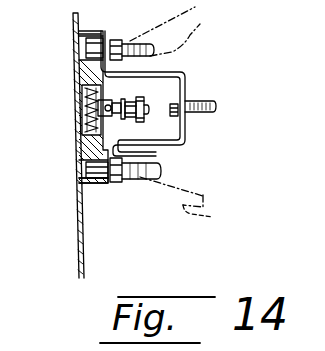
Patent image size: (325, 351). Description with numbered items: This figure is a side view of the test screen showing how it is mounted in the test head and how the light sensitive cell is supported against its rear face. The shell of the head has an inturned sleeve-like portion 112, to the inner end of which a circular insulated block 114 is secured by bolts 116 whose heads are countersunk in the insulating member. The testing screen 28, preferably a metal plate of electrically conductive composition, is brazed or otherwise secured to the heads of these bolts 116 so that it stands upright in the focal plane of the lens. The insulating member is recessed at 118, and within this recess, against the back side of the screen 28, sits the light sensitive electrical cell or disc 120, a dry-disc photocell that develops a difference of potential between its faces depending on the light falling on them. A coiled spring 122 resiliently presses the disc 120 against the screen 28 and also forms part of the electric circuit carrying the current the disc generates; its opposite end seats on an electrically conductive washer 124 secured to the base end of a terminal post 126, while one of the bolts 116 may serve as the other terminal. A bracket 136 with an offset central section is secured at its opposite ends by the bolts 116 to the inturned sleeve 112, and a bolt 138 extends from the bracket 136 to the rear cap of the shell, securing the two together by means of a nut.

The testing screen 28 is at (78, 206).
The inturned sleeve-like portion 112 is at (213, 217).
The circular insulated block 114 is at (96, 185).
The bolts 116 is at (184, 27).
The recess 118 is at (79, 81).
The light sensitive electrical cell 120 is at (76, 97).
The coiled spring 122 is at (93, 128).
The electrical conductive washer 124 is at (92, 117).
The terminal post 126 is at (141, 104).
The bracket 136 is at (187, 138).
The bolt 138 is at (222, 106).